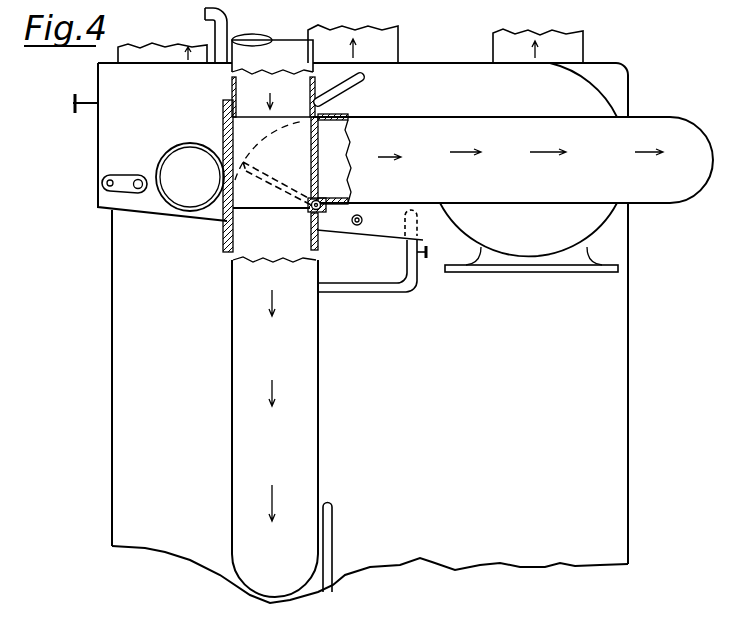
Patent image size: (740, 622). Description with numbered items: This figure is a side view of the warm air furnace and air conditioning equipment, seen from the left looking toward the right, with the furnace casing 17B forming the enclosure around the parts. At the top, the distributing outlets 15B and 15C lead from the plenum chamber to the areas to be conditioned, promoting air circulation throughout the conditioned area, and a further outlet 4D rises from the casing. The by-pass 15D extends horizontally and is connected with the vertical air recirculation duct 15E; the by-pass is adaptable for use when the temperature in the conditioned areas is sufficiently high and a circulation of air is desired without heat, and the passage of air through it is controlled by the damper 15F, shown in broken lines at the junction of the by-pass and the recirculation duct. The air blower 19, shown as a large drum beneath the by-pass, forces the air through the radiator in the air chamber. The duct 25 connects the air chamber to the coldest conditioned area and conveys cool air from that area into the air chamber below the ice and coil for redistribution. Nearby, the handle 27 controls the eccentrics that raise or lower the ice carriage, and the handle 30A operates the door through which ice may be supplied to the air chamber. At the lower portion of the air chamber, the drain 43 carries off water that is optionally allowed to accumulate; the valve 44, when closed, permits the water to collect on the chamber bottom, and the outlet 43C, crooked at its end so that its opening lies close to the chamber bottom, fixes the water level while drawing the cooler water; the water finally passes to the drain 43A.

The housing section 4D is at (162, 54).
The distributing outlet 15B is at (538, 46).
The distributing outlet 15C is at (353, 44).
The by-pass 15D is at (513, 159).
The air recirculation duct 15E is at (291, 315).
The damper 15F is at (264, 174).
The furnace casing 17B is at (112, 329).
The air blower 19 is at (529, 167).
The duct 25 is at (190, 177).
The handle 27 is at (118, 189).
The handle 30A is at (75, 106).
The drain 43 is at (405, 291).
The drain 43A is at (330, 553).
The outlet 43C is at (405, 229).
The valve 44 is at (427, 259).